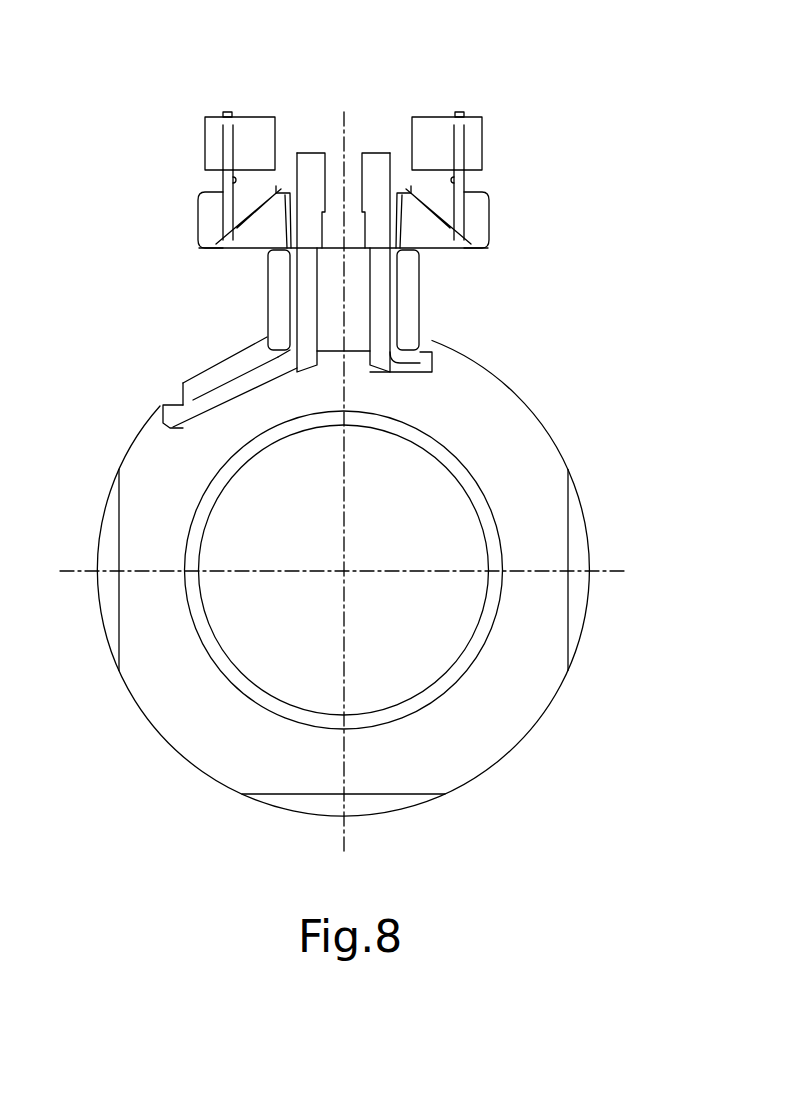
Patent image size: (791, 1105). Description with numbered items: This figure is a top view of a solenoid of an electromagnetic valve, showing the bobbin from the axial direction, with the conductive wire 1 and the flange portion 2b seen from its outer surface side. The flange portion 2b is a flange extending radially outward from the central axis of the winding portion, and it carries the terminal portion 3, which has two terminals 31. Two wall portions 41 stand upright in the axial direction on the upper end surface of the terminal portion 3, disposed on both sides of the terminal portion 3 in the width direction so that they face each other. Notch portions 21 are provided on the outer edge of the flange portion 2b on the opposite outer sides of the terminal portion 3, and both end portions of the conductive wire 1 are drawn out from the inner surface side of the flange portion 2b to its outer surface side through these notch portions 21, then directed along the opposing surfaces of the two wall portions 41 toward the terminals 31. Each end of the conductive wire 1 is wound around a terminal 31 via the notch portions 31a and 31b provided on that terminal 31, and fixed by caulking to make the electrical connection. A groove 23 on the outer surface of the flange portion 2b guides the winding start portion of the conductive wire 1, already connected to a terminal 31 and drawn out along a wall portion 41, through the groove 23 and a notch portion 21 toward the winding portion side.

The conductive wire 1 is at (297, 365).
The flange portion 2b is at (543, 452).
The terminal portion 3 is at (343, 325).
The notch portion 21 is at (175, 403).
The groove 23 is at (242, 382).
The terminal 31 is at (245, 205).
The notch portion 31a is at (218, 246).
The notch portion 31b is at (285, 188).
The wall portion 41 is at (268, 292).